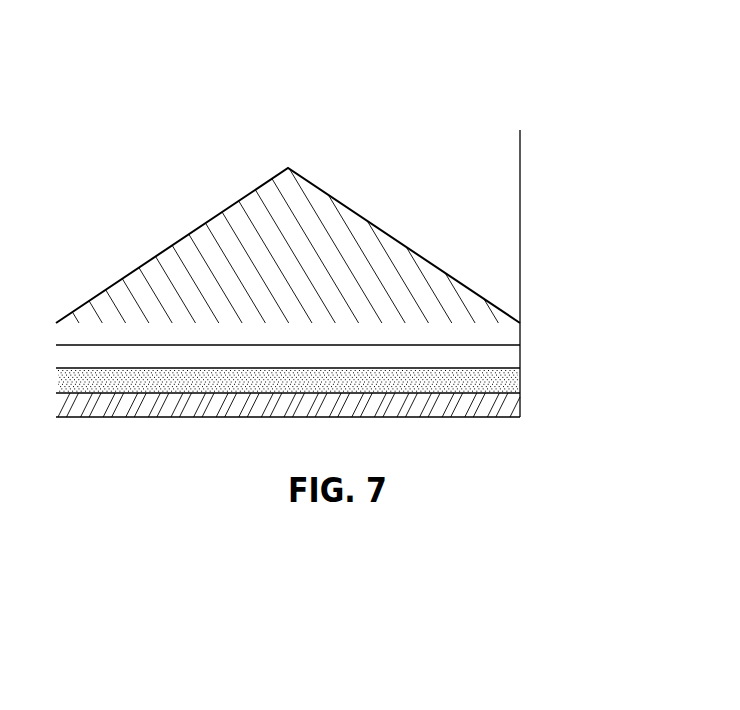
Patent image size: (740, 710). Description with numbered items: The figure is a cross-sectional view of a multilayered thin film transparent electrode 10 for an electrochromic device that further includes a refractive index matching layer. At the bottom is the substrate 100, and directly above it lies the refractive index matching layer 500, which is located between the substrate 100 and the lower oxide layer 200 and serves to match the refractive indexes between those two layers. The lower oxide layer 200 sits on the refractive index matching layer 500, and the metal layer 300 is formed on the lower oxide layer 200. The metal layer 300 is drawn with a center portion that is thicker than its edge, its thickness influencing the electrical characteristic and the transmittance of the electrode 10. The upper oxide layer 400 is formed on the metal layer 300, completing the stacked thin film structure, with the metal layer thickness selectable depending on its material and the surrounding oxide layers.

The multilayered thin film transparent electrode 10 is at (468, 78).
The substrate 100 is at (520, 402).
The lower oxide layer 200 is at (520, 356).
The metal layer 300 is at (520, 332).
The upper oxide layer 400 is at (520, 227).
The refractive index matching layer 500 is at (520, 377).